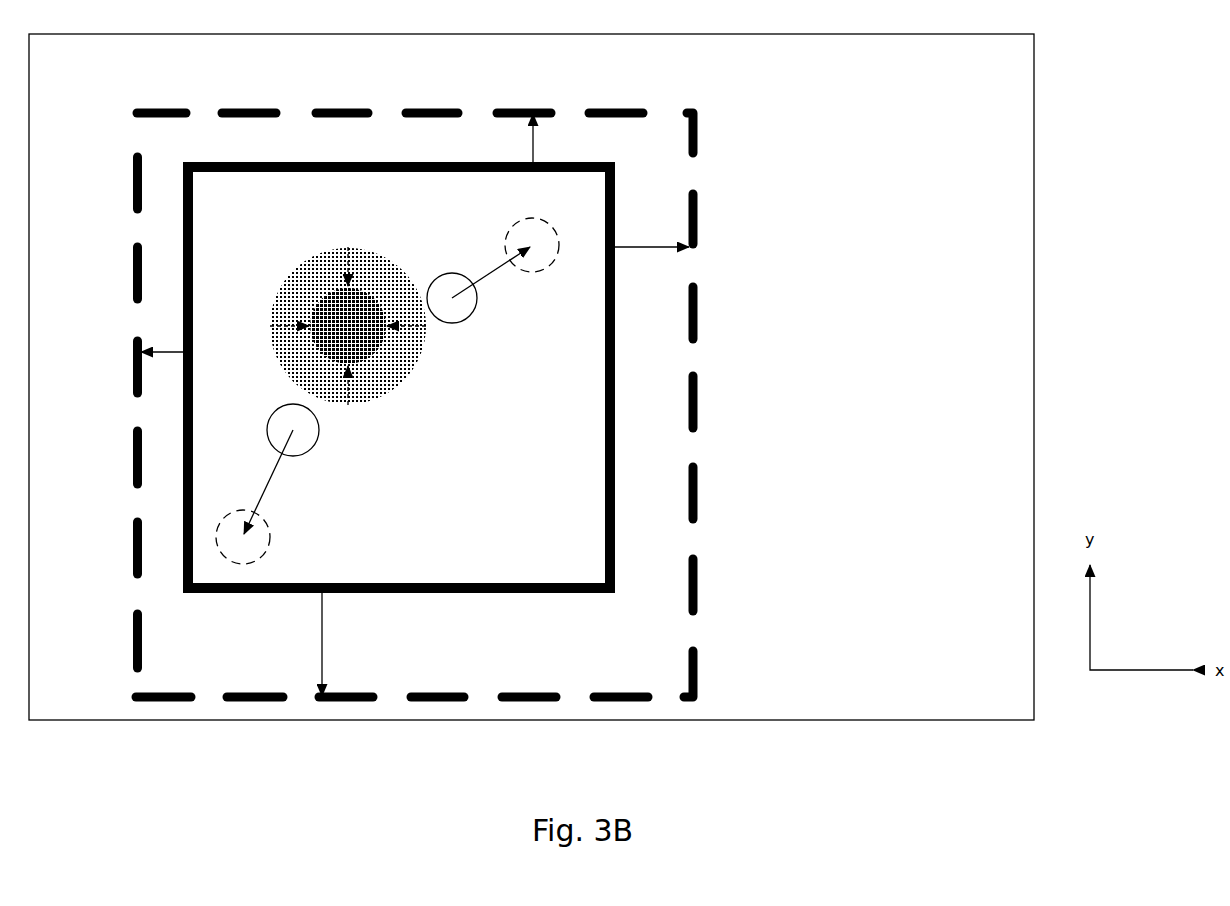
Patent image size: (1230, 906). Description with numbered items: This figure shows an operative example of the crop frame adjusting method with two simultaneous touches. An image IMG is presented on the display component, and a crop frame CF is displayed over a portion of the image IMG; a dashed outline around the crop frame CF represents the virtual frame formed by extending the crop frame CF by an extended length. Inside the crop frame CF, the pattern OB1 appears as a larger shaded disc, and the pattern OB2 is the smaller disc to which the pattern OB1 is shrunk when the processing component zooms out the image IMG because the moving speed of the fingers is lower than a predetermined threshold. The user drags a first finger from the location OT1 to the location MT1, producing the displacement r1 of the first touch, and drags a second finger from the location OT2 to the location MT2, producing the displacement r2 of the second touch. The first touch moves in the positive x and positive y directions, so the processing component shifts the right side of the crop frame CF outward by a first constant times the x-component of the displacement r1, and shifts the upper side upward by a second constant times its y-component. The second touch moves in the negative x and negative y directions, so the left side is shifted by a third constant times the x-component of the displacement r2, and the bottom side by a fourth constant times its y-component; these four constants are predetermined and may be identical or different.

The image IMG is at (961, 95).
The crop frame CF is at (623, 408).
The pattern OB1 is at (317, 260).
The pattern OB2 is at (331, 304).
The location OT1 is at (452, 311).
The location OT2 is at (317, 430).
The location MT1 is at (532, 259).
The location MT2 is at (264, 537).
The displacement of the first touch r1 is at (491, 272).
The displacement of the second touch r2 is at (273, 482).